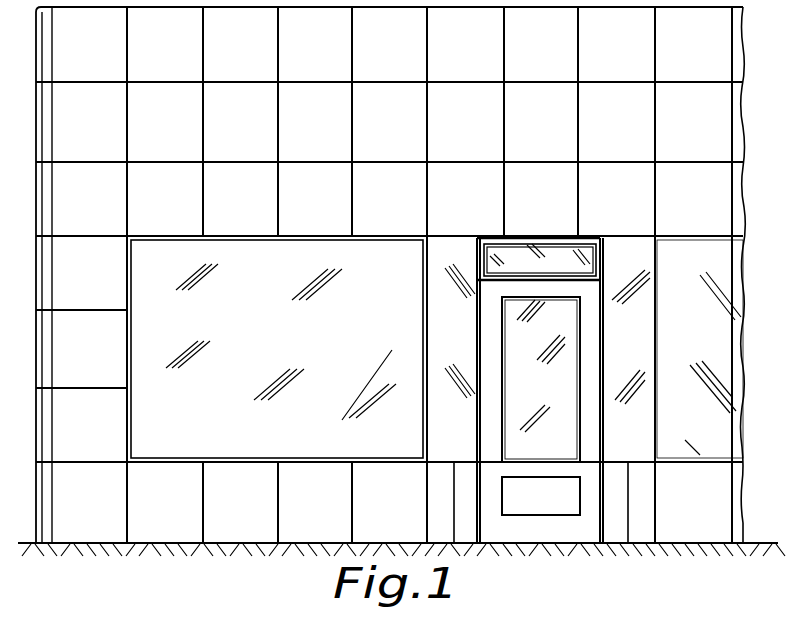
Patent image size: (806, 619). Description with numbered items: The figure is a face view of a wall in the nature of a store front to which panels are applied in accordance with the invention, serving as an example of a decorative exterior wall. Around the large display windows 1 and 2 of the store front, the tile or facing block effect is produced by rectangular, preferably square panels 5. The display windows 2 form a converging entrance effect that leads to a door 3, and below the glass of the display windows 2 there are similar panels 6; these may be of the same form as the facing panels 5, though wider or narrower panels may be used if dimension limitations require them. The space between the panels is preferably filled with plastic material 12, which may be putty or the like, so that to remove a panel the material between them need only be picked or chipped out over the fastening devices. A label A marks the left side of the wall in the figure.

The display window 1 is at (437, 349).
The display window 2 is at (541, 389).
The door 3 is at (538, 390).
The panel 5 is at (389, 275).
The panel 6 is at (538, 502).
The plastic material 12 is at (88, 389).
The section line A is at (37, 355).